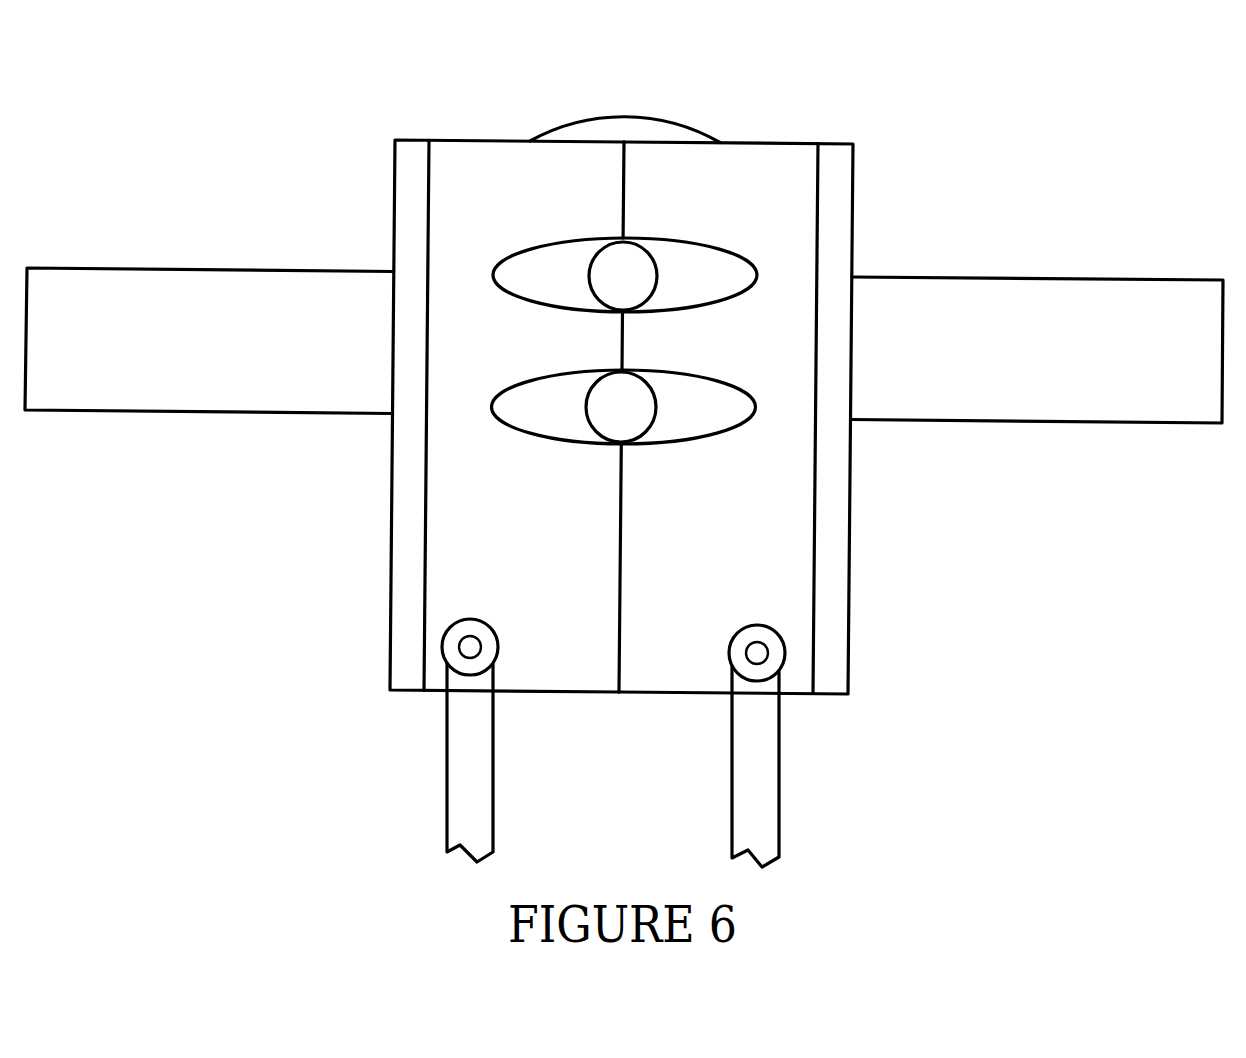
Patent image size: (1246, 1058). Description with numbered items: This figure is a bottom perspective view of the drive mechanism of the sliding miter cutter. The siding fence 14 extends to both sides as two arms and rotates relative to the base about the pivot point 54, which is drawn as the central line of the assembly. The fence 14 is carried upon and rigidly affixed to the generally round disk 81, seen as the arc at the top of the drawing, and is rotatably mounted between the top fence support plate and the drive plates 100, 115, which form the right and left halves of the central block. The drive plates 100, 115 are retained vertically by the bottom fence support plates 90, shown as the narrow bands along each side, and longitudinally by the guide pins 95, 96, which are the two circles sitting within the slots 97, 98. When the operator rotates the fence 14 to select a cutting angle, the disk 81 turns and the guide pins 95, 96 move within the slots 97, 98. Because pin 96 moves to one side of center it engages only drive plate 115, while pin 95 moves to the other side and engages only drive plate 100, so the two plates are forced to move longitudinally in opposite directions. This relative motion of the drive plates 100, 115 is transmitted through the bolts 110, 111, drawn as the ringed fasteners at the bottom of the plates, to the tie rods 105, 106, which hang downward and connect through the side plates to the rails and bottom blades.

The siding fence 14 is at (227, 287).
The pivot point 54 is at (622, 344).
The generally round disk 81 is at (640, 130).
The bottom fence support plates 90 is at (402, 497).
The guide pin 95 is at (640, 414).
The guide pin 96 is at (637, 262).
The slot 97 is at (500, 258).
The slot 98 is at (527, 433).
The drive plate 100 is at (773, 530).
The tie rod 105 is at (763, 767).
The tie rod 106 is at (458, 773).
The bolt 110 is at (763, 653).
The bolt 111 is at (463, 648).
The drive plate 115 is at (462, 527).